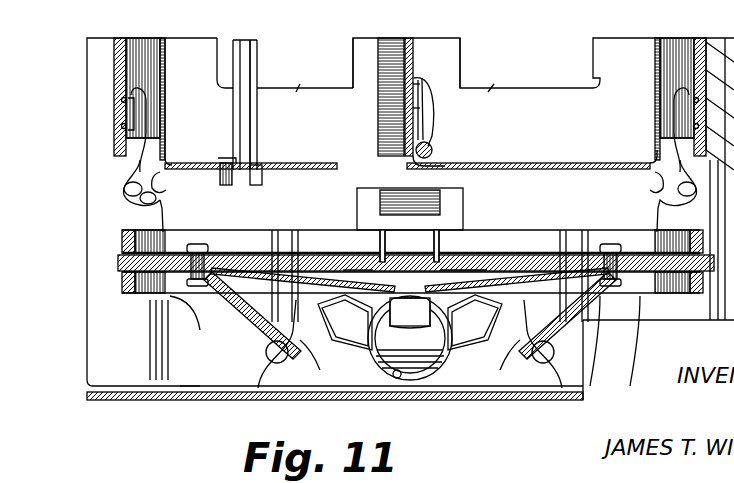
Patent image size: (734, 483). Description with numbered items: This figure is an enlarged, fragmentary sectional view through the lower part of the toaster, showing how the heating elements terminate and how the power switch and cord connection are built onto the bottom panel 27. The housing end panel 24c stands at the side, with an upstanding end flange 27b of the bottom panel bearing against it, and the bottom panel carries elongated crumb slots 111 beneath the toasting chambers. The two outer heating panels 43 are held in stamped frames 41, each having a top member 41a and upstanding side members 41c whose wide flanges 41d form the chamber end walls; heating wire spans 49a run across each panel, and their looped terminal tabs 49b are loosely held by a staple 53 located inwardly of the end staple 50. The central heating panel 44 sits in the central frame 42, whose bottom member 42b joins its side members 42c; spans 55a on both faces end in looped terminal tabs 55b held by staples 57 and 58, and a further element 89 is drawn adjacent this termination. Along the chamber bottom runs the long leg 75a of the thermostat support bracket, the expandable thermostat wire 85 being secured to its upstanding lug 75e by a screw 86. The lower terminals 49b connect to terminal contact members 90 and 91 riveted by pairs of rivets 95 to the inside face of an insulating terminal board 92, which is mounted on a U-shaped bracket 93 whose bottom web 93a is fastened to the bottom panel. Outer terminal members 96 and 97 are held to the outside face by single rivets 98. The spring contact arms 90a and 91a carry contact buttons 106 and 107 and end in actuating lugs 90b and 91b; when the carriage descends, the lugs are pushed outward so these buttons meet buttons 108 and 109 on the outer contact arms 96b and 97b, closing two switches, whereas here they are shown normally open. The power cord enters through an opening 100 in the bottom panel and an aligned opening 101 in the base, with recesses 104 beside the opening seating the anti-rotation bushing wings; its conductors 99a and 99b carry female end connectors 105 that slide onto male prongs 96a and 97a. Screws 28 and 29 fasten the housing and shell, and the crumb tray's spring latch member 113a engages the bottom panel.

The bottom panel 27 is at (96, 361).
The end panel 24c is at (162, 400).
The end flange 27b is at (196, 388).
The heating panel 43 is at (121, 38).
The frame 41 is at (112, 58).
The top member 41a is at (113, 68).
The heating wire span 49a is at (133, 95).
The staple 53 is at (121, 101).
The end staple 50 is at (121, 126).
The terminal tab 49b is at (134, 170).
The screw 28 is at (124, 187).
The side member 41c is at (408, 183).
The terminal contact member 90 is at (160, 202).
The long leg 75a is at (244, 40).
The thermostatic element 85 is at (256, 40).
The screw 86 is at (218, 158).
The lug 75e is at (262, 165).
The flange 41d is at (292, 169).
The central heating panel frame 42 is at (372, 50).
The bottom member 42b is at (385, 38).
The central heating panel 44 is at (409, 38).
The heating wire span 55a is at (417, 76).
The terminal tab 55b is at (430, 100).
The staple 58 is at (402, 84).
The staple 57 is at (402, 108).
The ball 89 is at (432, 146).
The side member 42c is at (446, 160).
The slot 111 is at (402, 78).
The terminal contact member 91 is at (658, 206).
The spring latch member 113a is at (440, 200).
The terminal board 92 is at (118, 260).
The contact arm 90a is at (280, 238).
The bracket 93 is at (122, 288).
The bottom web 93a is at (272, 232).
The contact arm 91a is at (540, 250).
The rivet 95 is at (198, 244).
The actuating lug 90b is at (380, 230).
The actuating lug 91b is at (440, 230).
The contact button 106 is at (350, 255).
The contact button 107 is at (508, 252).
The terminal member 96 is at (160, 296).
The rivet 98 is at (190, 296).
The terminal member 97 is at (645, 296).
The male prong 96a is at (262, 320).
The male prong 97a is at (568, 316).
The contact button 108 is at (290, 290).
The contact button 109 is at (530, 290).
The screw 29 is at (270, 362).
The conductor 99a is at (290, 388).
The conductor 99b is at (500, 388).
The female end connector 105 is at (416, 357).
The opening 100 is at (392, 372).
The opening 101 is at (416, 362).
The recess 104 is at (392, 374).
The contact arm 96b is at (358, 340).
The contact arm 97b is at (468, 340).